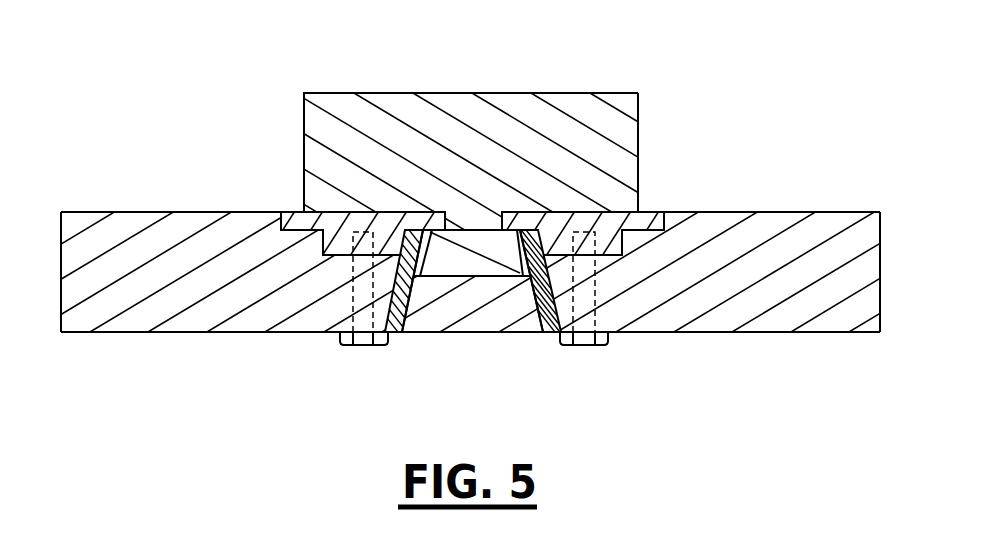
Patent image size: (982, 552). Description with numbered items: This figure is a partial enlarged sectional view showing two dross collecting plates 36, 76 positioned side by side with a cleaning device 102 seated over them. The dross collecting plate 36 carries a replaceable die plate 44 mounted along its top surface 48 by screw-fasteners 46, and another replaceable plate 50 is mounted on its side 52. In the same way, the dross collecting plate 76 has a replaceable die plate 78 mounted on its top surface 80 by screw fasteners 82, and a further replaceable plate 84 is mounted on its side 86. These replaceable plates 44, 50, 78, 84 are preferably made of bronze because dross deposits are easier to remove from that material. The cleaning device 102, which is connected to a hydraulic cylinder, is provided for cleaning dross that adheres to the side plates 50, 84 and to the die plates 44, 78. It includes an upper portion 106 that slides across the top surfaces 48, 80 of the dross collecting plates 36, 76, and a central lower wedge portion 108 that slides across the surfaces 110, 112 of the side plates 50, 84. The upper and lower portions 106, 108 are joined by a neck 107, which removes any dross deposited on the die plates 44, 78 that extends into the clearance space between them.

The dross collecting plate 36 is at (491, 239).
The top surface 48 is at (171, 178).
The replaceable die plate 44 is at (444, 202).
The screw-fasteners 46 is at (363, 323).
The replaceable plate 50 is at (407, 367).
The side 52 is at (429, 294).
The dross collecting plate 76 is at (720, 238).
The replaceable die plate 78 is at (607, 187).
The top surface 80 is at (772, 177).
The screw fasteners 82 is at (586, 322).
The replaceable plate 84 is at (539, 369).
The side 86 is at (521, 283).
The cleaning device 102 is at (470, 126).
The upper portion 106 is at (680, 142).
The neck 107 is at (477, 163).
The central lower wedge portion 108 is at (471, 275).
The surface 110 is at (418, 281).
The surface 112 is at (514, 305).